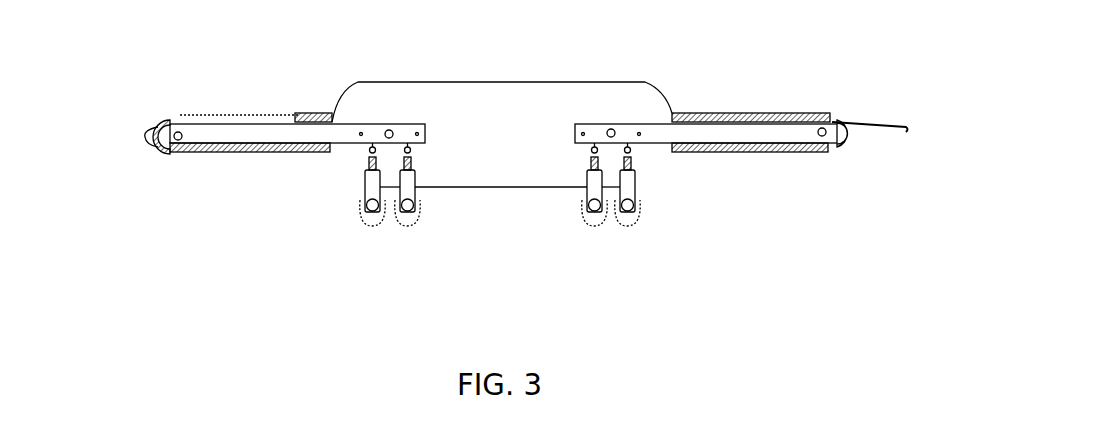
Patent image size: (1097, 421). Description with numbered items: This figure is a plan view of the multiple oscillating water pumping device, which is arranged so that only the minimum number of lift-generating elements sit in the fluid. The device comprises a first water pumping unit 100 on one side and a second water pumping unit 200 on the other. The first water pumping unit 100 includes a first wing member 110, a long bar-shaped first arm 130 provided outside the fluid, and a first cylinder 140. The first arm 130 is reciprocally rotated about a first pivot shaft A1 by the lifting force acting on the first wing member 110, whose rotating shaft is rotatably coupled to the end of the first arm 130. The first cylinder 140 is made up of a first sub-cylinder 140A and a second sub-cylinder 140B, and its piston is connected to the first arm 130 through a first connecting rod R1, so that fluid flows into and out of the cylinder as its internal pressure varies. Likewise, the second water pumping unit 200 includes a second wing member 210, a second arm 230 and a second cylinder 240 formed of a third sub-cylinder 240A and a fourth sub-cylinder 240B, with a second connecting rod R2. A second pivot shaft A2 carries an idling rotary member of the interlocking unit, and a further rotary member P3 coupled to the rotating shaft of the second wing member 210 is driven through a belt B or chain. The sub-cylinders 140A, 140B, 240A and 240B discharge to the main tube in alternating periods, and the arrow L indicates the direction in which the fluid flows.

The first water pumping unit 100 is at (155, 90).
The first wing member 110 is at (152, 146).
The first arm 130 is at (266, 128).
The first cylinder 140 is at (391, 241).
The (1-1)th cylinder 140A is at (366, 216).
The (1-2)th cylinder 140B is at (410, 216).
The second water pumping unit 200 is at (887, 72).
The second wing member 210 is at (863, 134).
The second arm 230 is at (733, 128).
The second cylinder 240 is at (612, 241).
The (2-1)th cylinder 240A is at (588, 216).
The (2-2)th cylinder 240B is at (631, 216).
The first pivot shaft A1 is at (391, 129).
The second pivot shaft A2 is at (611, 128).
The (1-3)th rotary member P3 is at (176, 114).
The first connecting rod R1 is at (364, 155).
The second connecting rod R2 is at (584, 148).
The belt B is at (226, 156).
The longitudinal direction L is at (123, 137).